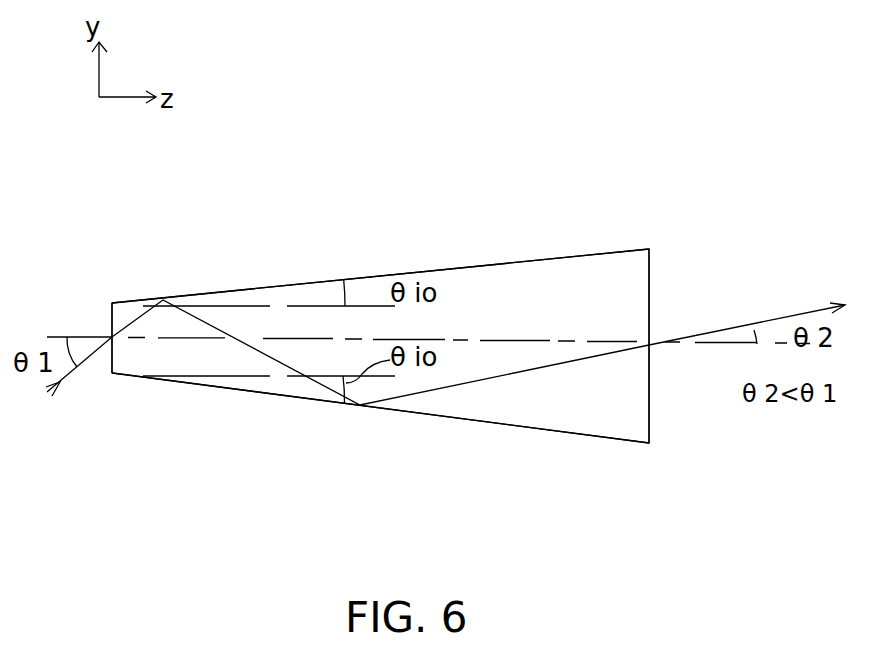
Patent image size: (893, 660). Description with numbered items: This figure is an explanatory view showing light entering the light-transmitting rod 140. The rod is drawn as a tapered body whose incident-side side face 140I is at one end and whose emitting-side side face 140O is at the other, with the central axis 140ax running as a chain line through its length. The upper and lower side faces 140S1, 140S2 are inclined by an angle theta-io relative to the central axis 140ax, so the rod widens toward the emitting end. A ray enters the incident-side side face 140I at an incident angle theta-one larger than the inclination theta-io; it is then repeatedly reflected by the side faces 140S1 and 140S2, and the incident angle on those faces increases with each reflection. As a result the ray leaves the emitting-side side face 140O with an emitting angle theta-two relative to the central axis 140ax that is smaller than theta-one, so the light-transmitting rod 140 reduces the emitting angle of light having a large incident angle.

The light-transmitting rod 140 is at (397, 204).
The side face 140S1 is at (287, 285).
The side face 140S2 is at (228, 388).
The incident-side side face 140I is at (112, 316).
The emitting-side side face 140O is at (740, 190).
The central axis 140ax is at (312, 340).